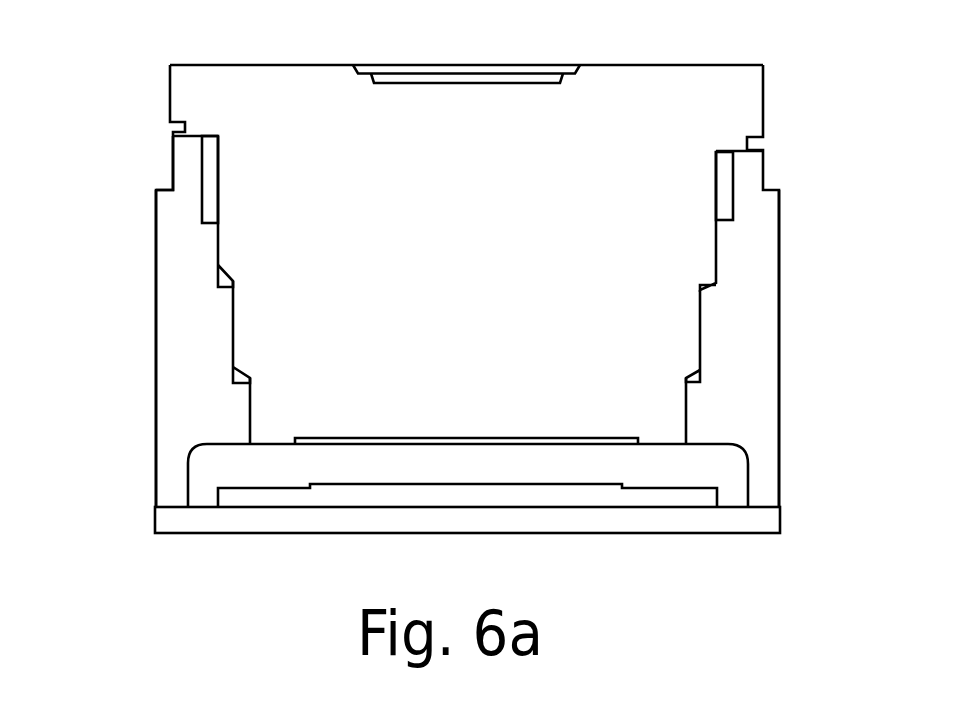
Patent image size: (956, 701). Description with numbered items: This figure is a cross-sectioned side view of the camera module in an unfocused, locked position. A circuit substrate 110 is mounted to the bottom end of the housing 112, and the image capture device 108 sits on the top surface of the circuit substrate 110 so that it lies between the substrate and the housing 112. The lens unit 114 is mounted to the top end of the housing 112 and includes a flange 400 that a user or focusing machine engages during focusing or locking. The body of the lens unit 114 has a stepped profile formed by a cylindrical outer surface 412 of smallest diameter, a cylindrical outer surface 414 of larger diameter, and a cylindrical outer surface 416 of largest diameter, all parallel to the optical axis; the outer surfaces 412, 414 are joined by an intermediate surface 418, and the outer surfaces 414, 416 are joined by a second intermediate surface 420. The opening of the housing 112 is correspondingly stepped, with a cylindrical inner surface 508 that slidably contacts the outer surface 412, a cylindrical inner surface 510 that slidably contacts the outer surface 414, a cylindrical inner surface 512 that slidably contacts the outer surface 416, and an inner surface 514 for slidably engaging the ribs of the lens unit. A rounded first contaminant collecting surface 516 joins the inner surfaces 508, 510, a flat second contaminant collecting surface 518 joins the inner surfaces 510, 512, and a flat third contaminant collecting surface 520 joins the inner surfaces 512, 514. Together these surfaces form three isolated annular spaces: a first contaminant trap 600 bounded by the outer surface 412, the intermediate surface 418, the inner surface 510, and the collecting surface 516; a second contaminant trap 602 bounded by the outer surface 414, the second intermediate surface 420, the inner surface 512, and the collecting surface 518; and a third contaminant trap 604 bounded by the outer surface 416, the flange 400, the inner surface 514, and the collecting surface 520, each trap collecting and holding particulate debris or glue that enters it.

The flange 400 is at (197, 93).
The lens unit 114 is at (768, 75).
The housing 112 is at (765, 382).
The circuit substrate 110 is at (385, 518).
The image capture device 108 is at (510, 492).
The third contaminant trap 604 is at (237, 164).
The second contaminant trap 602 is at (247, 264).
The first contaminant trap 600 is at (272, 377).
The cylindrical outer surface 416 is at (190, 178).
The cylindrical outer surface 414 is at (235, 305).
The cylindrical outer surface 412 is at (253, 403).
The inner surface 514 is at (190, 178).
The cylindrical inner surface 512 is at (222, 272).
The cylindrical inner surface 510 is at (237, 372).
The cylindrical inner surface 508 is at (250, 420).
The third contaminant collecting surface 520 is at (728, 223).
The second intermediate surface 420 is at (708, 280).
The second contaminant collecting surface 518 is at (717, 287).
The intermediate surface 418 is at (698, 373).
The first contaminant collecting surface 516 is at (700, 382).